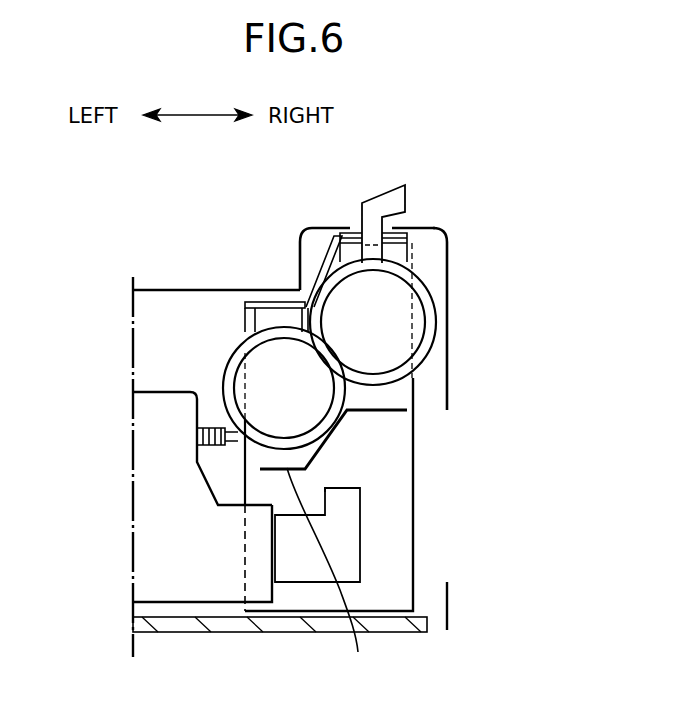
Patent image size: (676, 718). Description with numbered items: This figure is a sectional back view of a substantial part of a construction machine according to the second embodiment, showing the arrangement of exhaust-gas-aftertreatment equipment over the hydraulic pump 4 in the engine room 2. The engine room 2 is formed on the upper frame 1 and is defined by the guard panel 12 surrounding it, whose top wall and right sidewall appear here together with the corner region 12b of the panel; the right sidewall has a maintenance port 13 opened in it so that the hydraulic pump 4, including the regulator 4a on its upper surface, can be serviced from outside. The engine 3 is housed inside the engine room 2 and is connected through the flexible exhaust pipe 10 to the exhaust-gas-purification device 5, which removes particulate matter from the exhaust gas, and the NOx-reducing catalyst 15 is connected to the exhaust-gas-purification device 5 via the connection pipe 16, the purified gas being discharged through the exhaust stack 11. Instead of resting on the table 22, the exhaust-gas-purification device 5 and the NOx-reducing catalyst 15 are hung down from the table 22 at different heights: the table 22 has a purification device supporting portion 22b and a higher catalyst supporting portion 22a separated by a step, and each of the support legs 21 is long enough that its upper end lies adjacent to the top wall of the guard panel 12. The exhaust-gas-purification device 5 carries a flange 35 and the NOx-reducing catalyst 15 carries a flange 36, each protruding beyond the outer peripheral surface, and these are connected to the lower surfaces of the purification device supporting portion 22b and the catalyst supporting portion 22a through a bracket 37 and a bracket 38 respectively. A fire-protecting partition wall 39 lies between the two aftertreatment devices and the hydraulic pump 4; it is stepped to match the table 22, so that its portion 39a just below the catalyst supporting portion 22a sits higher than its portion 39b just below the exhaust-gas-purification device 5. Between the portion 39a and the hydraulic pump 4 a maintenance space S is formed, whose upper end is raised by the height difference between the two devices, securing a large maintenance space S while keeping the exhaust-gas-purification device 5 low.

The upper frame 1 is at (247, 633).
The engine room 2 is at (138, 360).
The engine 3 is at (176, 590).
The hydraulic pump 4 is at (302, 583).
The regulator 4a is at (362, 497).
The exhaust-gas-purification device 5 is at (240, 347).
The flexible exhaust pipe 10 is at (208, 424).
The exhaust stack 11 is at (378, 197).
The guard panel 12 is at (158, 289).
The cover bracket 12b is at (318, 227).
The maintenance port 13 is at (444, 470).
The NOx-reducing catalyst 15 is at (426, 300).
The connection pipe 16 is at (332, 383).
The support leg 21 is at (408, 538).
The table 22 is at (312, 268).
The catalyst supporting portion 22a is at (398, 230).
The purification device supporting portion 22b is at (268, 301).
The flange 35 is at (263, 446).
The flange 36 is at (432, 334).
The bracket 37 is at (244, 320).
The bracket 38 is at (400, 256).
The fire-protecting partition wall 39 is at (387, 406).
The portion of partition wall 39a is at (368, 412).
The portion of partition wall 39b is at (336, 576).
The maintenance space S is at (364, 470).